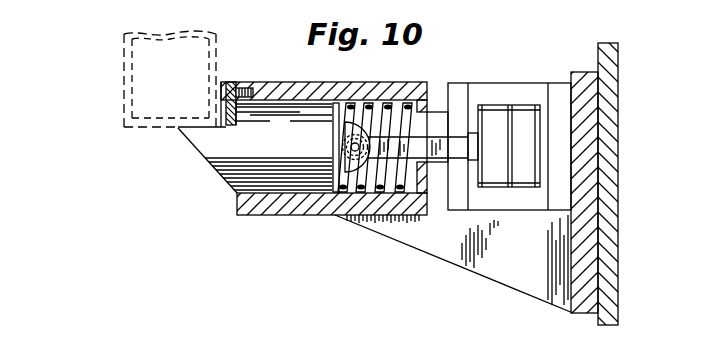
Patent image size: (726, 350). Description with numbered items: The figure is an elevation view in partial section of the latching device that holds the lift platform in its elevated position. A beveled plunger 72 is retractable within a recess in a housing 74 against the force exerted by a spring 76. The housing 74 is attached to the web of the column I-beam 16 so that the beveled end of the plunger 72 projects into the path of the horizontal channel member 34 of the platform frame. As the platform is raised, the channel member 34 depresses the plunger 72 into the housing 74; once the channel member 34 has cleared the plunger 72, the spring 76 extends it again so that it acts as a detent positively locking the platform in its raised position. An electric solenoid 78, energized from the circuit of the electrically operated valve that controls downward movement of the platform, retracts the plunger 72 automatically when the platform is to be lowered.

The I-beam 16 is at (612, 124).
The horizontal channel member 34 is at (163, 85).
The beveled plunger 72 is at (205, 150).
The housing 74 is at (305, 208).
The spring 76 is at (350, 195).
The electric solenoid 78 is at (523, 120).